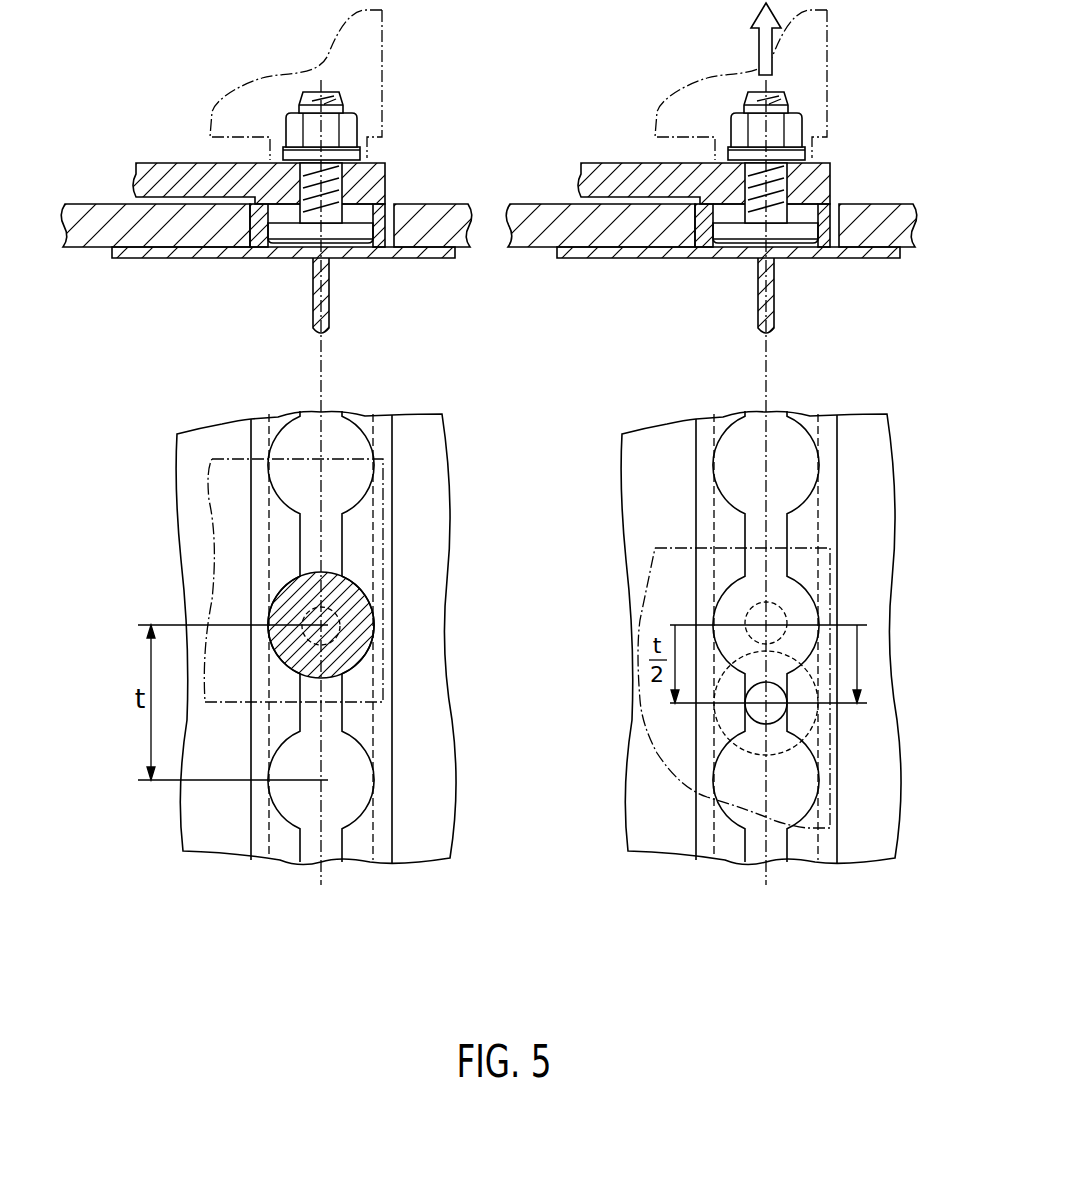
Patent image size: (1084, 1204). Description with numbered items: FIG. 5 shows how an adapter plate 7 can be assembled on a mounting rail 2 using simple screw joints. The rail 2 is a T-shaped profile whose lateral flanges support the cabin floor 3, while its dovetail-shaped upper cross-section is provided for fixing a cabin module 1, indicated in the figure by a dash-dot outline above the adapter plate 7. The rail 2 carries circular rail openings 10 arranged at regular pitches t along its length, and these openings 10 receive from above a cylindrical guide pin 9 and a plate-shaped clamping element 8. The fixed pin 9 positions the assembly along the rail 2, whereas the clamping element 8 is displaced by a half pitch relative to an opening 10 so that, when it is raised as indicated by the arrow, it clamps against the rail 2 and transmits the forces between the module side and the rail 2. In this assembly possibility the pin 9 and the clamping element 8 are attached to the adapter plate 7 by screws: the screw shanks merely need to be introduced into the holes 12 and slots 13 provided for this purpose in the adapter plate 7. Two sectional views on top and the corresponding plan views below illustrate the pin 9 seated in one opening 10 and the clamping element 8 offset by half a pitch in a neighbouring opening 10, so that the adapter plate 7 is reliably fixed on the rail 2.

The cabin module 1 is at (365, 50).
The mounting rail 2 is at (283, 217).
The cabin floor 3 is at (86, 210).
The adapter plate 7 is at (152, 168).
The clamping element 8 is at (806, 230).
The guide pin 9 is at (355, 230).
The rail opening 10 is at (372, 200).
The hole 12 is at (300, 182).
The slot 13 is at (785, 180).